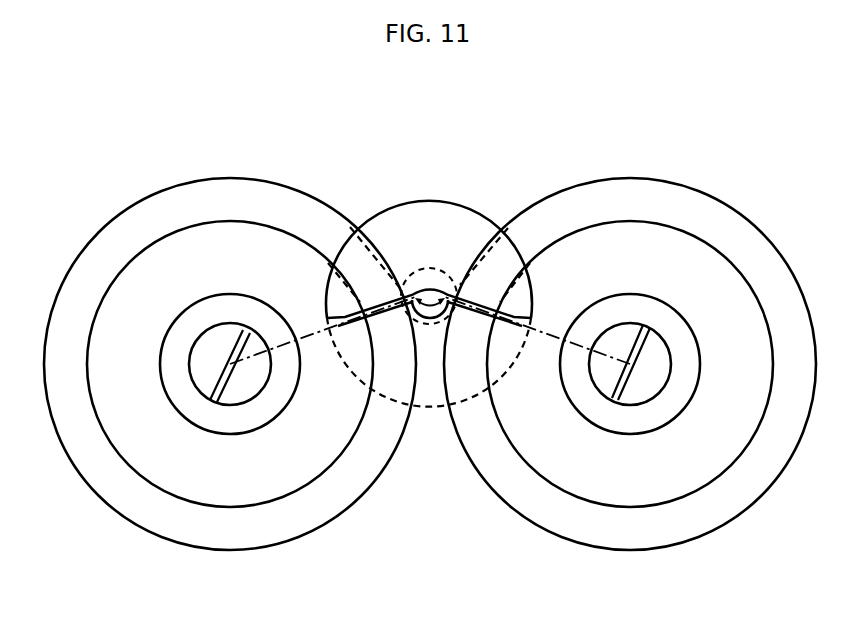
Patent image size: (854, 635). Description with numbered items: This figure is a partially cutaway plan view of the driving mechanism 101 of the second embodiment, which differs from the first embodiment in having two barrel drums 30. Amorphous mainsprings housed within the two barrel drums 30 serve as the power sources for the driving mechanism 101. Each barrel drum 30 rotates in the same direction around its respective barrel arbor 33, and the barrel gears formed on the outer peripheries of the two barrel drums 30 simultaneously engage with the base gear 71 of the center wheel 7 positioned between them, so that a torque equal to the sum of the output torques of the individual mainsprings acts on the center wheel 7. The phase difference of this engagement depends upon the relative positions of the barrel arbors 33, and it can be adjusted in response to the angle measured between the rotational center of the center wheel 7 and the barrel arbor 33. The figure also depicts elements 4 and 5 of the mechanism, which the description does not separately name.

The driving mechanism 101 is at (74, 207).
The barrel drum 30 is at (262, 202).
The rotor disc 4 is at (120, 403).
The barrel arbor 33 is at (223, 420).
The rotary shaft 5 is at (251, 380).
The center wheel 7 is at (447, 213).
The base gear 71 is at (433, 320).